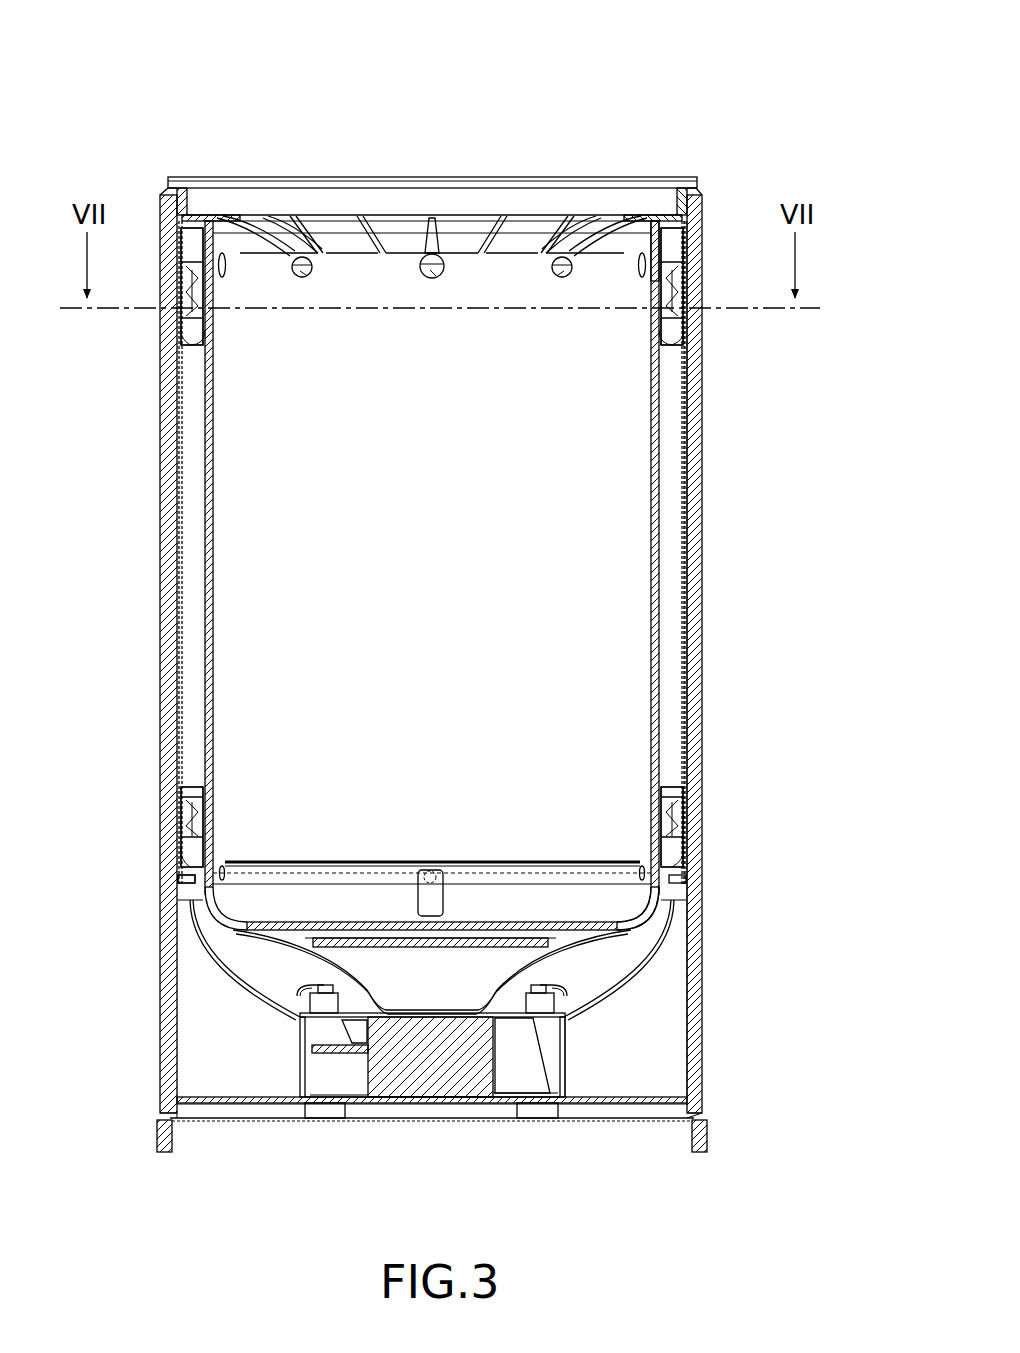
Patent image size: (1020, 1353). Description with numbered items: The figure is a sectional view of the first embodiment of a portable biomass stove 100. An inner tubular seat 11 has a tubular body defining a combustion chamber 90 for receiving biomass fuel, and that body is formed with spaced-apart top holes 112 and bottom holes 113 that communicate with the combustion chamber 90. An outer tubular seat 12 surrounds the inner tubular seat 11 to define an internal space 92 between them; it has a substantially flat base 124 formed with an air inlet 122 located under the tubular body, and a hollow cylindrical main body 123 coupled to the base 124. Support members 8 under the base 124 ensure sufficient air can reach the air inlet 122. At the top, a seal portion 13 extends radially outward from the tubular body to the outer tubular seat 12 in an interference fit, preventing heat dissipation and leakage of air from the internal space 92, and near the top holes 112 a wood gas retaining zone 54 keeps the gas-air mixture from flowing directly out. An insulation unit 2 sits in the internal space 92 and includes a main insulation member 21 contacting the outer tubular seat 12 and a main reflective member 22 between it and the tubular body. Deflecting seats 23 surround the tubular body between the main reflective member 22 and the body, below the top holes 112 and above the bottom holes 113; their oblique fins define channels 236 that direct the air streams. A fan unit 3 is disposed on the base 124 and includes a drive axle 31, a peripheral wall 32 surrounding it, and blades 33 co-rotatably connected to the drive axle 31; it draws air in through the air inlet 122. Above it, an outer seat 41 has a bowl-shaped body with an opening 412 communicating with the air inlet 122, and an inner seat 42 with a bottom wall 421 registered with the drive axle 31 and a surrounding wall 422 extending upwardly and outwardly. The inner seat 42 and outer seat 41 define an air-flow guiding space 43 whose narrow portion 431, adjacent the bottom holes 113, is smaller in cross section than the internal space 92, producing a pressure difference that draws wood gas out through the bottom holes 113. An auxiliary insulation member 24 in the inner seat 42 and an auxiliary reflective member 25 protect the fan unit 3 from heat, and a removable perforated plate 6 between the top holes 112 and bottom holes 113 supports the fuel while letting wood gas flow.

The portable biomass stove 100 is at (633, 128).
The seal portion 13 is at (172, 181).
The wood gas retaining zone 54 is at (211, 217).
The combustion chamber 90 is at (364, 298).
The top holes 112 is at (661, 262).
The channel 236 is at (188, 334).
The deflecting seats 23 is at (684, 342).
The inner tubular seat 11 is at (655, 440).
The internal space 92 is at (682, 502).
The main reflective member 22 is at (686, 562).
The main insulation member 21 is at (694, 610).
The main body 123 is at (702, 686).
The outer tubular seat 12 is at (160, 700).
The perforated plate 6 is at (578, 862).
The bottom holes 113 is at (180, 853).
The narrow portion 431 is at (686, 881).
The insulation unit 2 is at (700, 906).
The inner seat 42 is at (233, 933).
The auxiliary reflective member 25 is at (632, 941).
The outer seat 41 is at (240, 960).
The auxiliary insulation member 24 is at (640, 956).
The air-flow guiding space 43 is at (252, 978).
The opening 412 is at (566, 1046).
The support members 8 is at (156, 1137).
The base 124 is at (193, 1104).
The surrounding wall 422 is at (258, 1104).
The air inlet 122 is at (305, 1104).
The blades 33 is at (338, 1100).
The bottom wall 421 is at (420, 1014).
The drive axle 31 is at (470, 1070).
The peripheral wall 32 is at (566, 1046).
The fan unit 3 is at (613, 1206).